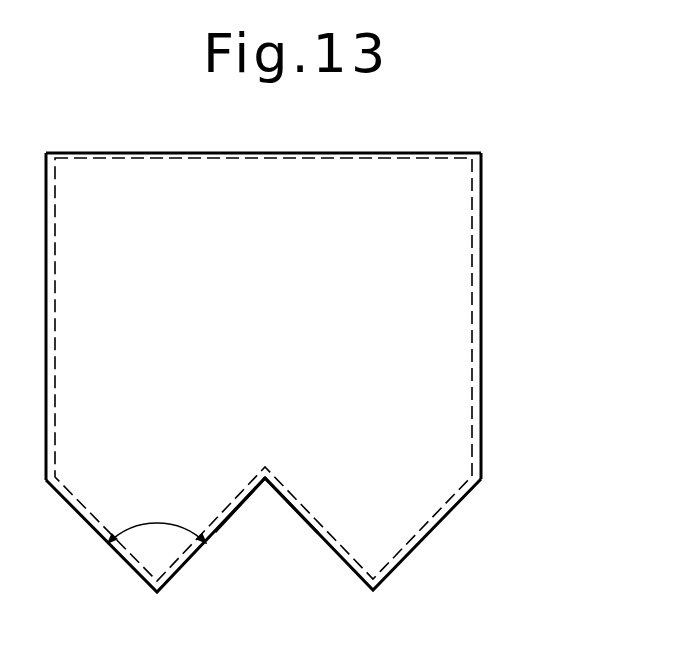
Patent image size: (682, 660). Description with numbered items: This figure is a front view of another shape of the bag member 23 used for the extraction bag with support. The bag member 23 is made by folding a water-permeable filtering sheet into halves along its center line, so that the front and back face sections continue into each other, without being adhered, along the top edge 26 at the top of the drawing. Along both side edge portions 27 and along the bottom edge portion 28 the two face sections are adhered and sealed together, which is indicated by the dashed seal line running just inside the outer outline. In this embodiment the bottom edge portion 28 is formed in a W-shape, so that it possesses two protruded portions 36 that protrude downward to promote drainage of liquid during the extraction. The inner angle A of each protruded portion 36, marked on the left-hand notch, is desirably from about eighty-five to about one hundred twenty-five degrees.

The bag member 23 is at (498, 172).
The top edge 26 is at (387, 153).
The side edge portions 27 is at (481, 244).
The bottom edge portion 28 is at (325, 542).
The protruded portions 36 is at (110, 537).
The inner angle A is at (112, 531).